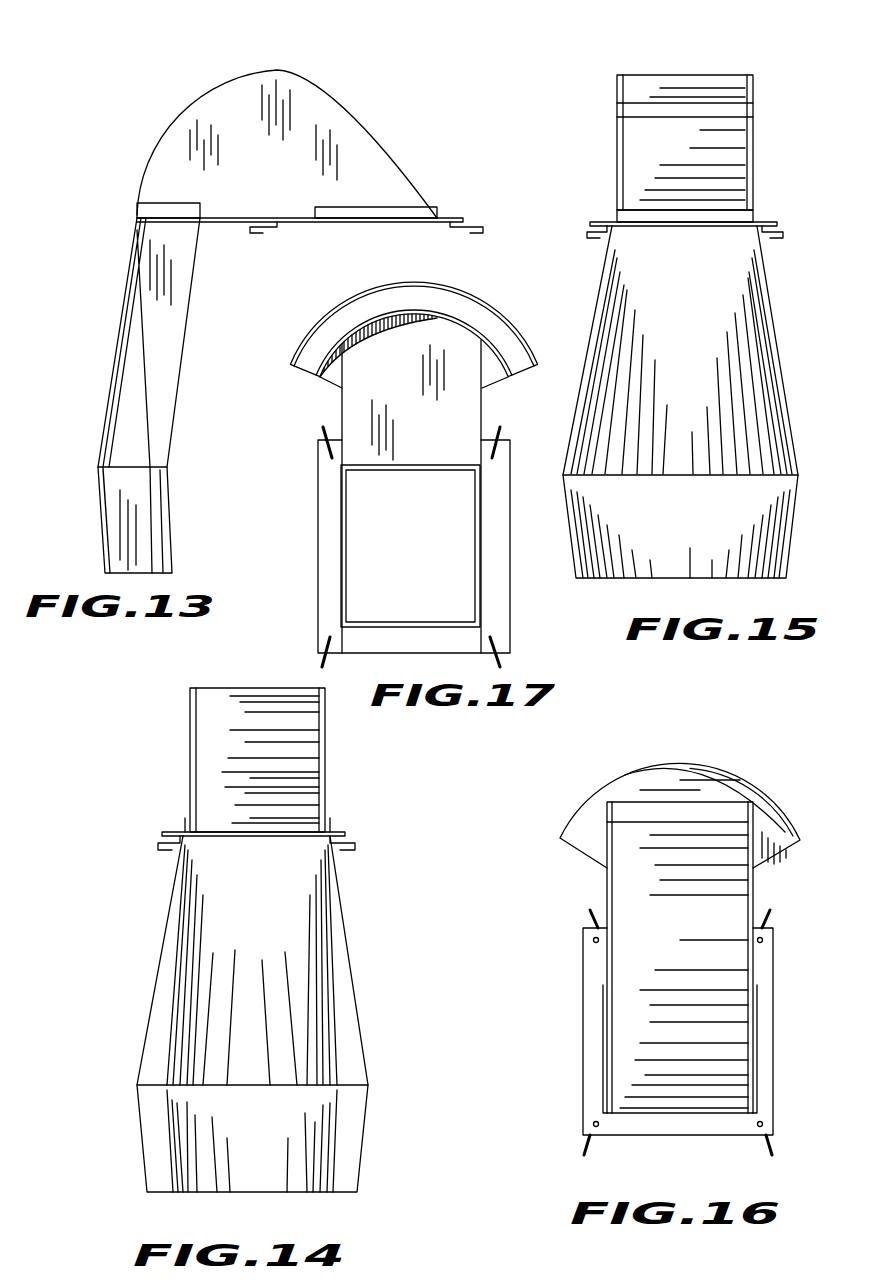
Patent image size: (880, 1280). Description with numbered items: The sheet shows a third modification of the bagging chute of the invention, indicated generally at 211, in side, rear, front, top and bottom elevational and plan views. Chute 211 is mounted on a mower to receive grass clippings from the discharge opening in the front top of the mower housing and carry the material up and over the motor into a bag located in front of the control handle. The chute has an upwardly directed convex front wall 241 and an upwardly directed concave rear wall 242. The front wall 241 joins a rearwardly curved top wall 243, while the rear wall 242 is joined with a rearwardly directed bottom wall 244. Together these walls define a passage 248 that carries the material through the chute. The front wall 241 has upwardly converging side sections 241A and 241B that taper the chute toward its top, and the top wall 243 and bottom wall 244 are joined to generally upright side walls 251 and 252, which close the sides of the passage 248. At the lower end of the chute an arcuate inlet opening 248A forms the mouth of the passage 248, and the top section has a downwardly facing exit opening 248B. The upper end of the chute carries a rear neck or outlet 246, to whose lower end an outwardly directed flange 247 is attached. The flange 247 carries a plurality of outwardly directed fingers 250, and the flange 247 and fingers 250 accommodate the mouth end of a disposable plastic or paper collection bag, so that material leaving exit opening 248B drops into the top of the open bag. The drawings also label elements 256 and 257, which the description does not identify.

In FIG. 13, the bagging chute 211 is at (148, 141).
In FIG. 15, the bagging chute 211 is at (738, 75).
In FIG. 14, the bagging chute 211 is at (180, 812).
In FIG. 16, the bagging chute 211 is at (781, 798).
In FIG. 13, the front wall 241 is at (112, 355).
In FIG. 17, the front wall 241 is at (390, 290).
In FIG. 15, the front wall 241 is at (730, 388).
In FIG. 16, the front wall 241 is at (700, 790).
In FIG. 15, the side section 241A is at (595, 320).
In FIG. 15, the side section 241B is at (795, 462).
In FIG. 17, the rear wall 242 is at (437, 320).
In FIG. 14, the rear wall 242 is at (298, 918).
In FIG. 13, the top wall 243 is at (278, 70).
In FIG. 15, the top wall 243 is at (672, 78).
In FIG. 14, the top wall 243 is at (248, 695).
In FIG. 16, the top wall 243 is at (632, 888).
In FIG. 17, the bottom wall 244 is at (365, 382).
In FIG. 14, the outlet 246 is at (210, 780).
In FIG. 16, the outlet 246 is at (720, 1093).
In FIG. 17, the flange 247 is at (318, 541).
In FIG. 15, the flange 247 is at (763, 222).
In FIG. 14, the flange 247 is at (340, 832).
In FIG. 16, the flange 247 is at (585, 1097).
In FIG. 17, the passage 248 is at (312, 352).
In FIG. 17, the arcuate inlet opening 248A is at (350, 318).
In FIG. 17, the exit opening 248B is at (432, 543).
In FIG. 13, the fingers 250 is at (268, 235).
In FIG. 17, the fingers 250 is at (322, 430).
In FIG. 15, the fingers 250 is at (770, 241).
In FIG. 14, the fingers 250 is at (165, 851).
In FIG. 16, the fingers 250 is at (585, 915).
In FIG. 15, the side wall 251 is at (617, 146).
In FIG. 14, the side wall 251 is at (190, 713).
In FIG. 16, the side wall 251 is at (752, 1025).
In FIG. 13, the side wall 252 is at (345, 114).
In FIG. 15, the side wall 252 is at (755, 156).
In FIG. 14, the side wall 252 is at (322, 782).
In FIG. 16, the side wall 252 is at (605, 1028).
In FIG. 13, the spacer block 256 is at (400, 213).
In FIG. 13, the base plate 257 is at (450, 218).